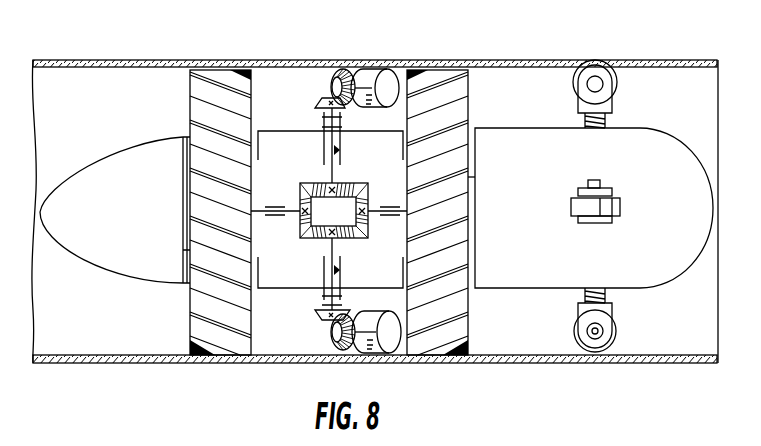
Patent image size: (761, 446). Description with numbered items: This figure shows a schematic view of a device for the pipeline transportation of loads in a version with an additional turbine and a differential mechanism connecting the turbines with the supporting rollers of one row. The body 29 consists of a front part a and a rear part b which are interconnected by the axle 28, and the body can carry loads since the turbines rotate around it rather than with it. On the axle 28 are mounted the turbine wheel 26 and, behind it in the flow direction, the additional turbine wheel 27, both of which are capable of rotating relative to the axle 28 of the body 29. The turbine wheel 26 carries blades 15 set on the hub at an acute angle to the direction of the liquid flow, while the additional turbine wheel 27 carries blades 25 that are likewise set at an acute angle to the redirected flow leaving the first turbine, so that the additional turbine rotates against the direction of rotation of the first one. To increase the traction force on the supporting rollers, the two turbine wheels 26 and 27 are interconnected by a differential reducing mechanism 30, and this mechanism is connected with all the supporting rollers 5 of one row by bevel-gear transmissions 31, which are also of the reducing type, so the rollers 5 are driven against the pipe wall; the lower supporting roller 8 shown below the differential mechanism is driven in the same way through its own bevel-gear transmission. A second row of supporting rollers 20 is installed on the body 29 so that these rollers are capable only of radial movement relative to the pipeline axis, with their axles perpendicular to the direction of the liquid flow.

The supporting rollers 5 is at (389, 76).
The drive wheel 8 is at (357, 344).
The blades 15 is at (198, 99).
The supporting rollers of the second row 20 is at (617, 82).
The blades of the additional turbine wheel 25 is at (453, 100).
The turbine wheel 26 is at (217, 66).
The additional turbine wheel 27 is at (431, 64).
The axle 28 is at (287, 218).
The body 29 is at (537, 123).
The differential reducing mechanism 30 is at (305, 176).
The bevel-gear transmissions 31 is at (328, 76).
The part of the body a is at (138, 254).
The part of the body b is at (660, 268).